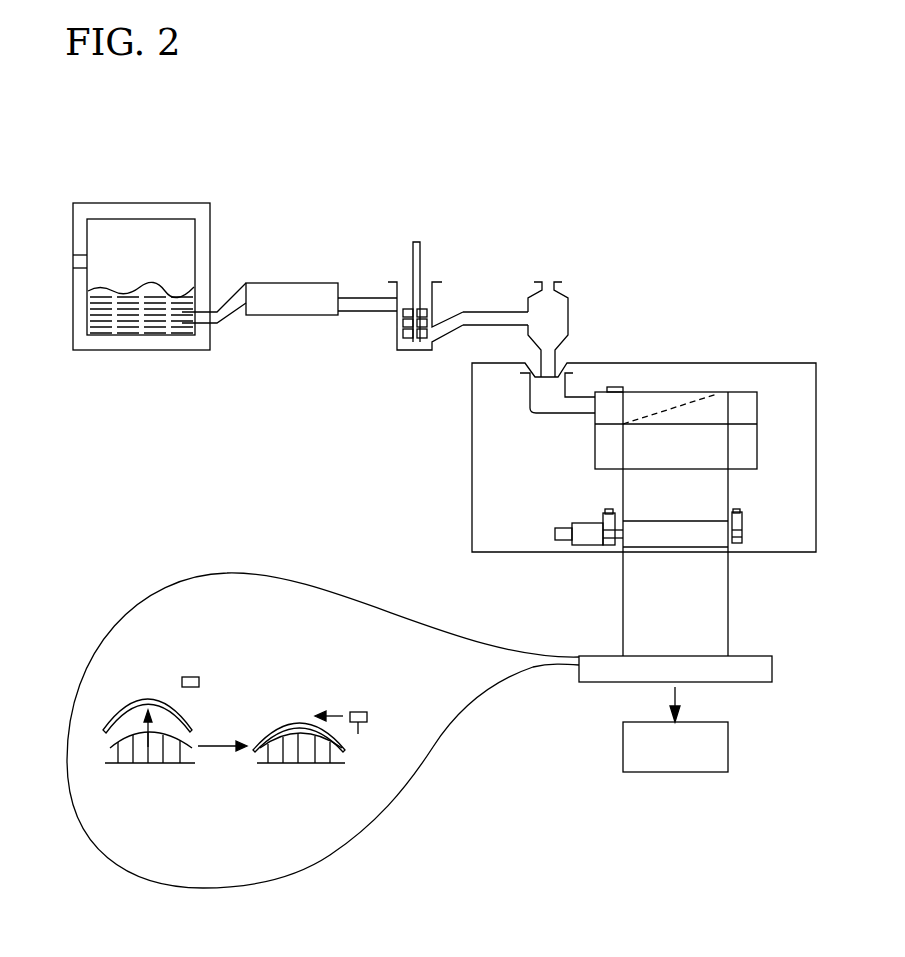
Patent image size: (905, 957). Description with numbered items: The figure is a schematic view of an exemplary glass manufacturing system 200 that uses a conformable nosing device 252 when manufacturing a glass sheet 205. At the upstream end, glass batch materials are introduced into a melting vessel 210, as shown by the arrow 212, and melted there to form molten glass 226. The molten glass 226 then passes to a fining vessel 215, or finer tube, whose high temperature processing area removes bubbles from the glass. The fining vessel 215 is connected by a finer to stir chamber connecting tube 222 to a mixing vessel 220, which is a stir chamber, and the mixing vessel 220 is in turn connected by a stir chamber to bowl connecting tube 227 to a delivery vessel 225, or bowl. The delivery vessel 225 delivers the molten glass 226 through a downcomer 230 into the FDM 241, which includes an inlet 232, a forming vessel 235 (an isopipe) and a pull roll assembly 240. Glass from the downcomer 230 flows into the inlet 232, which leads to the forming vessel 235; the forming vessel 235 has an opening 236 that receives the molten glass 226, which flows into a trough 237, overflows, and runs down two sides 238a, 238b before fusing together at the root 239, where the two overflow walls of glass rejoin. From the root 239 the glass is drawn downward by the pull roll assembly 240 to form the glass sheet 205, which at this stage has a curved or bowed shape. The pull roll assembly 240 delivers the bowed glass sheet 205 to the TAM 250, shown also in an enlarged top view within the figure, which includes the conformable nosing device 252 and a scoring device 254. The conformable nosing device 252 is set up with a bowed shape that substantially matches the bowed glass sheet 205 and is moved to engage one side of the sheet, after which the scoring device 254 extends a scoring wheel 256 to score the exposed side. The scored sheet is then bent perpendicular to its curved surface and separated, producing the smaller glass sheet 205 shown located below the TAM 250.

The glass manufacturing system 200 is at (652, 227).
The glass sheet 205 is at (623, 558).
The melting vessel 210 is at (135, 203).
The arrow 212 is at (76, 264).
The fining vessel 215 is at (268, 282).
The mixing vessel 220 is at (442, 296).
The finer to stir chamber connecting tube 222 is at (360, 312).
The delivery vessel 225 is at (568, 308).
The molten glass 226 is at (160, 288).
The stir chamber to bowl connecting tube 227 is at (470, 328).
The downcomer 230 is at (572, 357).
The inlet 232 is at (530, 413).
The forming vessel 235 is at (757, 402).
The opening 236 is at (593, 418).
The trough 237 is at (650, 402).
The side 238a is at (640, 452).
The side 238b is at (757, 440).
The root 239 is at (695, 470).
The pull roll assembly 240 is at (742, 525).
The FDM 241 is at (472, 468).
The TAM 250 is at (595, 655).
The conformable nosing device 252 is at (138, 765).
The scoring device 254 is at (199, 677).
The scoring wheel 256 is at (362, 728).